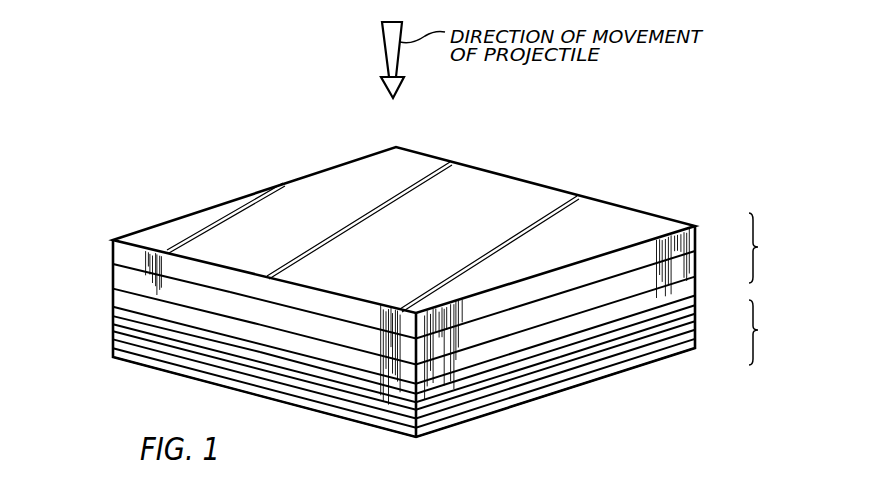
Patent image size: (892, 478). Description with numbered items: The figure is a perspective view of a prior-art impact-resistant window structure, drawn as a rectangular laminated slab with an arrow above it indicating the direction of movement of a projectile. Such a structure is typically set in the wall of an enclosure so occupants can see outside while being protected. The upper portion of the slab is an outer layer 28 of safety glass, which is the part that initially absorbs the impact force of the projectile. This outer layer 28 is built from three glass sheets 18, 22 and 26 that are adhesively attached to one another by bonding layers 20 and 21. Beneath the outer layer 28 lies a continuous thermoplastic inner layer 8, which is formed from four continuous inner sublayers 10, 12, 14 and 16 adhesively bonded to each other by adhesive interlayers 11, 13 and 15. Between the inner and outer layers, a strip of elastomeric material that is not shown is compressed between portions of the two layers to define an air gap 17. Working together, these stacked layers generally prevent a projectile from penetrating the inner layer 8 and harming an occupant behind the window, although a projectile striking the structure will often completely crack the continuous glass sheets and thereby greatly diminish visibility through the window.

The continuous thermoplastic inner layer 8 is at (741, 331).
The inner sublayer 10 is at (437, 395).
The adhesive interlayer 11 is at (112, 318).
The inner sublayer 12 is at (689, 318).
The adhesive interlayer 13 is at (110, 337).
The inner sublayer 14 is at (689, 334).
The adhesive interlayer 15 is at (110, 355).
The inner sublayer 16 is at (525, 402).
The air gap 17 is at (692, 307).
The glass sheet 18 is at (692, 242).
The bonding layer 20 is at (112, 263).
The bonding layer 21 is at (112, 288).
The glass sheet 22 is at (683, 265).
The glass sheet 26 is at (685, 289).
The outer layer 28 is at (744, 254).